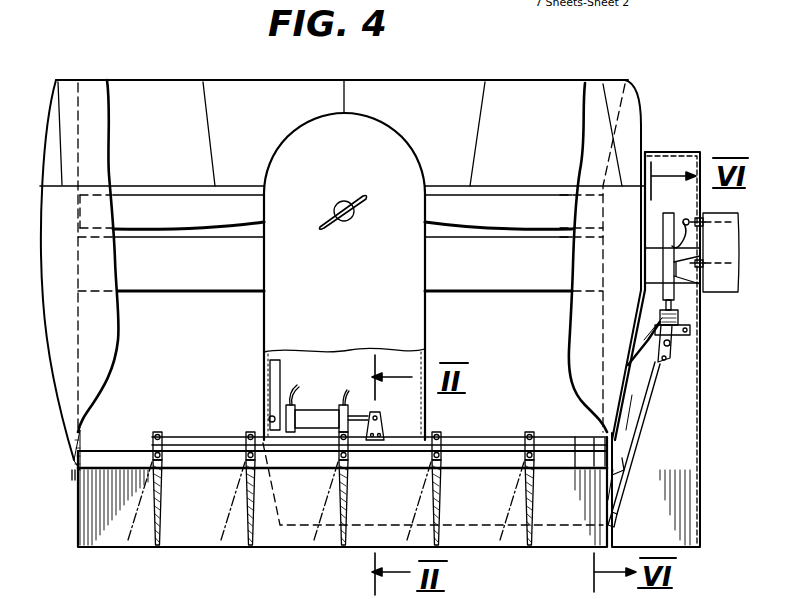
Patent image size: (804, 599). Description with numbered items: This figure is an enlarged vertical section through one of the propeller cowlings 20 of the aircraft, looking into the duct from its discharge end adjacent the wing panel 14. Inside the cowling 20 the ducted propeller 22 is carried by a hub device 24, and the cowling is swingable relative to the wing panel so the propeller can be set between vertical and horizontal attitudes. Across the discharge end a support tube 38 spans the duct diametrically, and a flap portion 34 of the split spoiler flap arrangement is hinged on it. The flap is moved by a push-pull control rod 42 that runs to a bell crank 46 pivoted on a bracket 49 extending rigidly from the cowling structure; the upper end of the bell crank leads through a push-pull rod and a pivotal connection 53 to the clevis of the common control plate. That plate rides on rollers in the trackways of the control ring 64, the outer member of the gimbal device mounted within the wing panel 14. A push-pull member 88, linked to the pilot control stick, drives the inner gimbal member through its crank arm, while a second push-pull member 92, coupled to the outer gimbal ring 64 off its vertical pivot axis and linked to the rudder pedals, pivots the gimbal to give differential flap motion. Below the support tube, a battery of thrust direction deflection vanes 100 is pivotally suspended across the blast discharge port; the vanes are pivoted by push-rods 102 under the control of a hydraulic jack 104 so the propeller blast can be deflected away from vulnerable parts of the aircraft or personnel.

The propeller cowling 20 is at (561, 66).
The propeller 22 is at (163, 194).
The hub device 24 is at (352, 333).
The wing panel 14 is at (714, 292).
The flap portion 34 is at (182, 549).
The support tube 38 is at (570, 448).
The push-pull control rod 42 is at (637, 404).
The bell crank 46 is at (666, 366).
The bracket 49 is at (638, 354).
The pivotal connection 53 is at (701, 349).
The control ring 64 is at (673, 212).
The push-pull member 88 is at (729, 222).
The push-pull member 92 is at (733, 257).
The thrust direction deflection vane 100 is at (160, 495).
The push-rod 102 is at (216, 437).
The hydraulic jack 104 is at (318, 409).